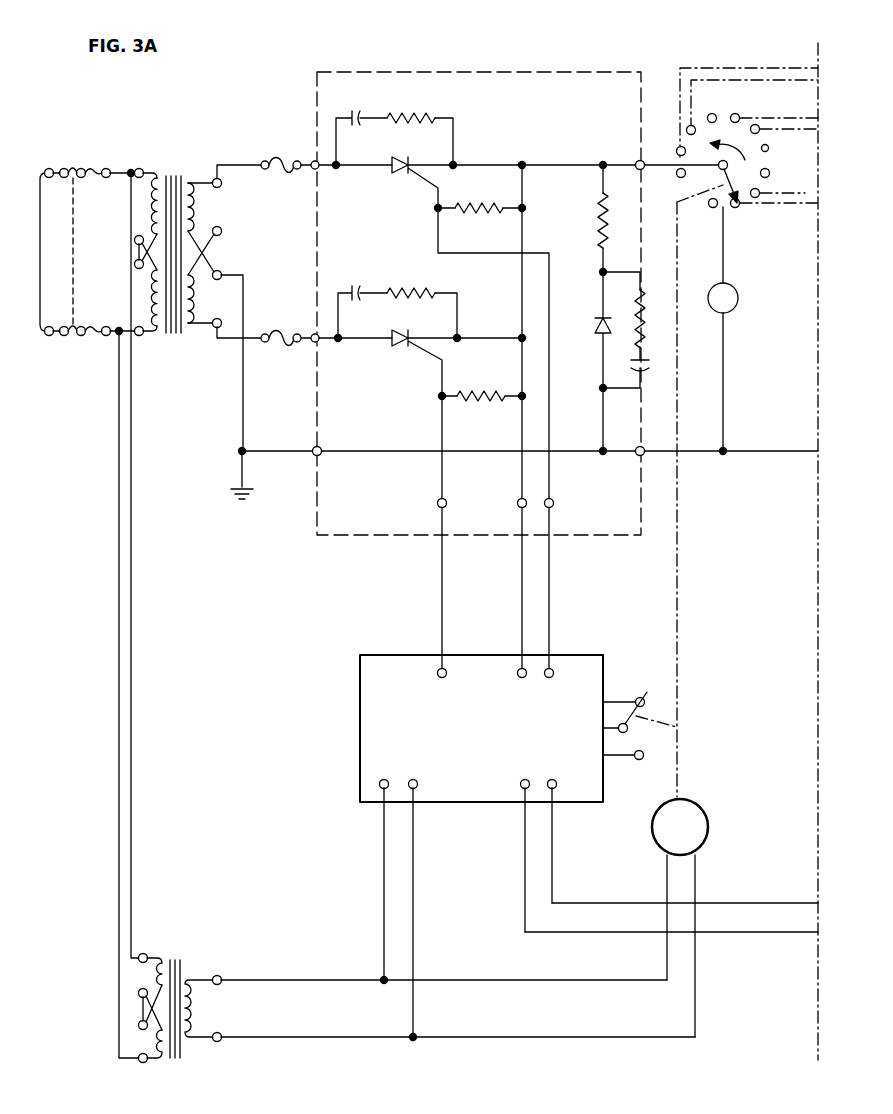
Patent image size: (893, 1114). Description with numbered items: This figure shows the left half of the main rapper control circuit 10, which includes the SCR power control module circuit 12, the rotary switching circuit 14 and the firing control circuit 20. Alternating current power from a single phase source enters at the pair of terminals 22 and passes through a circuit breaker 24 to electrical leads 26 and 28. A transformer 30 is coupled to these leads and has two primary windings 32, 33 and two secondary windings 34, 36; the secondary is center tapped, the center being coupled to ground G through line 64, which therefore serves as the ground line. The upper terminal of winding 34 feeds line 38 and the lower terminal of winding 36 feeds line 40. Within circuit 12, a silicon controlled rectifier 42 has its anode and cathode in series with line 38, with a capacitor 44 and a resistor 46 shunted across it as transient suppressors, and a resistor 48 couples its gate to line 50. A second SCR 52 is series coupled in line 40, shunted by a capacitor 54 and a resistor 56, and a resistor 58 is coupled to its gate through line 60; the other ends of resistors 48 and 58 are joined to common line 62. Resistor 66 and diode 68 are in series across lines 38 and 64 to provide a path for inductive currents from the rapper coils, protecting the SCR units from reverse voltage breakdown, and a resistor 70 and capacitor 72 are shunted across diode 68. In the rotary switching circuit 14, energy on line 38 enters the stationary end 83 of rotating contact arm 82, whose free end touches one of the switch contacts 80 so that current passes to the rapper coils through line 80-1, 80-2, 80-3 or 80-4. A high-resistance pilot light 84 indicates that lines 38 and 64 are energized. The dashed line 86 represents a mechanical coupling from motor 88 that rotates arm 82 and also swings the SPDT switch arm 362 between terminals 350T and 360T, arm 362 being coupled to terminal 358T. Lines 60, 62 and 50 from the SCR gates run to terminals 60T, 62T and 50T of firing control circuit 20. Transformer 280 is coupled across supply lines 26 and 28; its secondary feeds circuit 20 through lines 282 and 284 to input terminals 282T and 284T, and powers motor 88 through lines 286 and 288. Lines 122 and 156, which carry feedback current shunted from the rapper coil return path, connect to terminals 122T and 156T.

The main rapper control circuit 10 is at (106, 476).
The SCR power control module circuit 12 is at (289, 123).
The rotary switching circuit 14 is at (729, 62).
The firing control circuit 20 is at (606, 652).
The terminals 22 is at (40, 254).
The circuit breaker 24 is at (74, 240).
The electrical lead 26 is at (118, 170).
The electrical lead 28 is at (112, 336).
The transformer 30 is at (172, 293).
The primary winding 32 is at (150, 304).
The primary winding 33 is at (150, 210).
The secondary winding 34 is at (198, 212).
The secondary winding 36 is at (197, 298).
The line 38 is at (299, 161).
The line 40 is at (300, 344).
The silicon controlled rectifier 42 is at (393, 173).
The capacitor 44 is at (360, 114).
The resistor 46 is at (405, 114).
The resistor 48 is at (486, 202).
The line 50 is at (494, 252).
The second silicon controlled rectifier 52 is at (396, 346).
The capacitor 54 is at (360, 287).
The resistor 56 is at (428, 286).
The resistor 58 is at (467, 391).
The line 60 is at (441, 430).
The line 62 is at (527, 248).
The center tap line 64 is at (586, 449).
The resistor 66 is at (596, 224).
The diode 68 is at (597, 335).
The resistor 70 is at (646, 305).
The capacitor 72 is at (645, 371).
The switch contacts 80 is at (733, 113).
The line 80-1 is at (803, 202).
The line 80-2 is at (775, 192).
The line 80-3 is at (785, 128).
The line 80-4 is at (803, 117).
The rotating electrical contact arm 82 is at (721, 171).
The stationary end 83 is at (730, 170).
The pilot light 84 is at (738, 300).
The mechanical coupling 86 is at (678, 476).
The motor 88 is at (697, 812).
The ground G is at (240, 478).
The terminal 60T is at (438, 676).
The common terminal 62T is at (519, 677).
The terminal 50T is at (554, 675).
The terminal 350T is at (640, 697).
The terminal 358T is at (628, 732).
The terminal 360T is at (636, 759).
The SPDT switch arm 362 is at (645, 712).
The input terminal 282T is at (380, 782).
The input terminal 284T is at (417, 784).
The terminal 156T is at (524, 778).
The terminal 122T is at (554, 778).
The line 122 is at (760, 901).
The line 156 is at (760, 931).
The transformer 280 is at (180, 962).
The power input line 282 is at (382, 878).
The power input line 284 is at (414, 880).
The line 286 is at (665, 877).
The line 288 is at (697, 877).